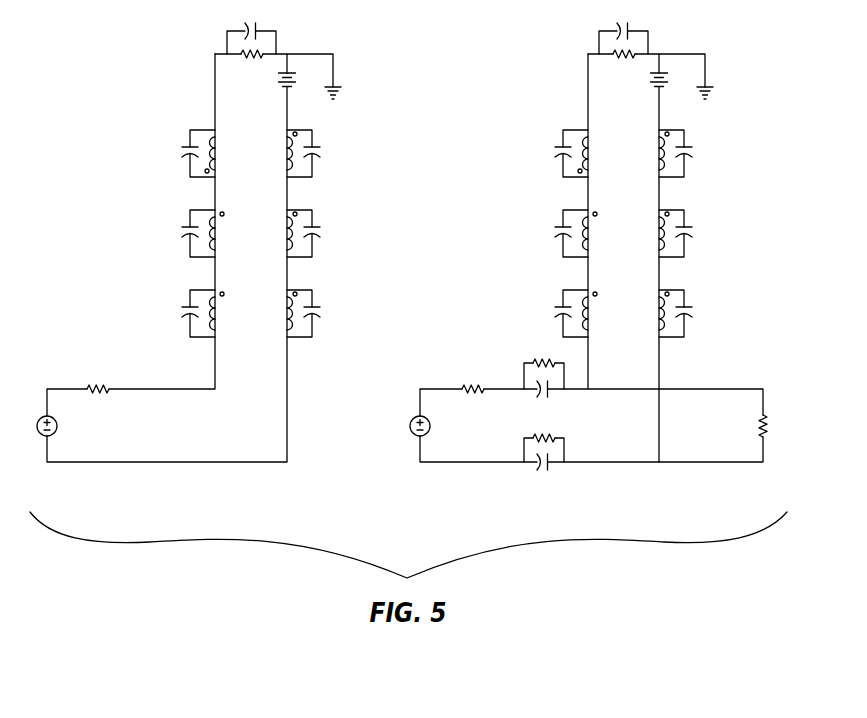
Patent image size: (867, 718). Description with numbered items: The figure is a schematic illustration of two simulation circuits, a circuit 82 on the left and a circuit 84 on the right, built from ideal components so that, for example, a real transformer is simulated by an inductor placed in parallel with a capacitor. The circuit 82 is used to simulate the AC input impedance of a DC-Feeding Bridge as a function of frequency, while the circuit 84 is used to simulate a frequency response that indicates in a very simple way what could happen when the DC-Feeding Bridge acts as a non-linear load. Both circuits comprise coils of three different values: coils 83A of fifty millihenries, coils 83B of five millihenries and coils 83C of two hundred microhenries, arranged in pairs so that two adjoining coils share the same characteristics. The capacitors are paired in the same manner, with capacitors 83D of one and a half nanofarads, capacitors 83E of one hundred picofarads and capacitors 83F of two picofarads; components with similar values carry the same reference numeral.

The circuit 82 is at (151, 44).
The circuit 84 is at (523, 44).
The coils 83A is at (224, 153).
The coils 83B is at (224, 233).
The coils 83C is at (224, 313).
The capacitors 83D is at (182, 150).
The capacitors 83E is at (182, 230).
The capacitors 83F is at (182, 310).